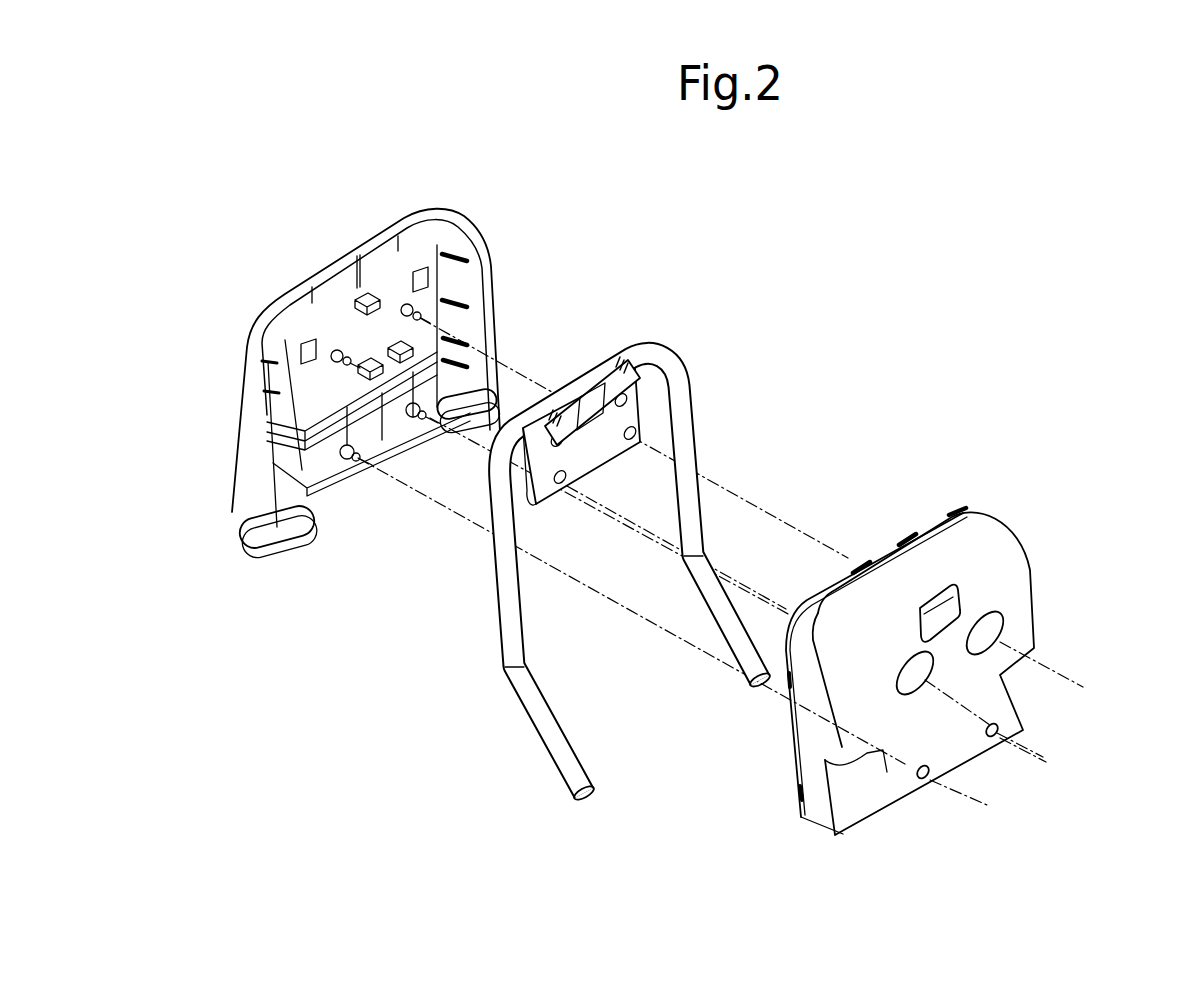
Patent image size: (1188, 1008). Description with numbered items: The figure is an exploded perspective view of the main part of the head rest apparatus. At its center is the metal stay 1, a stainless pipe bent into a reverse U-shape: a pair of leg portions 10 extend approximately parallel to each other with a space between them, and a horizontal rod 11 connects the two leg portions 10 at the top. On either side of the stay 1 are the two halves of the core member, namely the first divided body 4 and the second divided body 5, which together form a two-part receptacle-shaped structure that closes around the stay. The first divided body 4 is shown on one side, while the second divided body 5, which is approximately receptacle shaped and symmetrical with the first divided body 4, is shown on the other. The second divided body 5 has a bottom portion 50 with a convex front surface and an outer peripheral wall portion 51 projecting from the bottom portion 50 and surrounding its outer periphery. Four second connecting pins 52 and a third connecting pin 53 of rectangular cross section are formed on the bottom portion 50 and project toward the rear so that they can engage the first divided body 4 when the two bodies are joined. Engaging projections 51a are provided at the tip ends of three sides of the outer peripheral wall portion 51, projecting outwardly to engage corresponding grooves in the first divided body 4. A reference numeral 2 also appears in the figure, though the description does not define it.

The metal stay 1 is at (604, 575).
The mounting plate 2 is at (545, 497).
The first divided body 4 is at (467, 230).
The second divided body 5 is at (937, 663).
The leg portions 10 is at (693, 525).
The horizontal rod 11 is at (585, 380).
The bottom portion 50 is at (1030, 638).
The outer peripheral wall portion 51 is at (812, 702).
The engaging projections 51a is at (797, 788).
The second connecting pins 52 is at (1003, 627).
The third connecting pin 53 is at (953, 608).